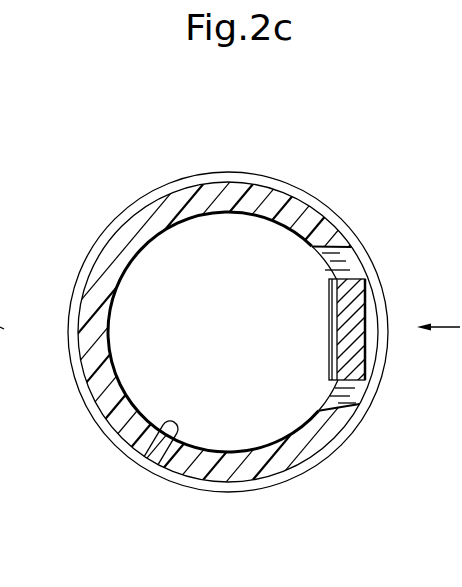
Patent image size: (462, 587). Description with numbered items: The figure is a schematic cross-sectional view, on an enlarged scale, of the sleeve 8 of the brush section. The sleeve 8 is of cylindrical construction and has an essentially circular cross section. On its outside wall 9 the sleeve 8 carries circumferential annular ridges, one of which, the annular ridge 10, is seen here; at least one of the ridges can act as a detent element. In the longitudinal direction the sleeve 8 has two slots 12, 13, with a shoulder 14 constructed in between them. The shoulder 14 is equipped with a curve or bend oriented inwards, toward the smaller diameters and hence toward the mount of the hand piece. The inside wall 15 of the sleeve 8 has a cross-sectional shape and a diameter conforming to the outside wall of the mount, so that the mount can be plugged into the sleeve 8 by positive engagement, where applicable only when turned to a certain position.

The sleeve 8 is at (171, 163).
The outside wall 9 is at (269, 180).
The annular ridge 10 is at (326, 210).
The slot 12 is at (351, 265).
The slot 13 is at (350, 395).
The shoulder 14 is at (350, 327).
The inside wall 15 is at (141, 451).